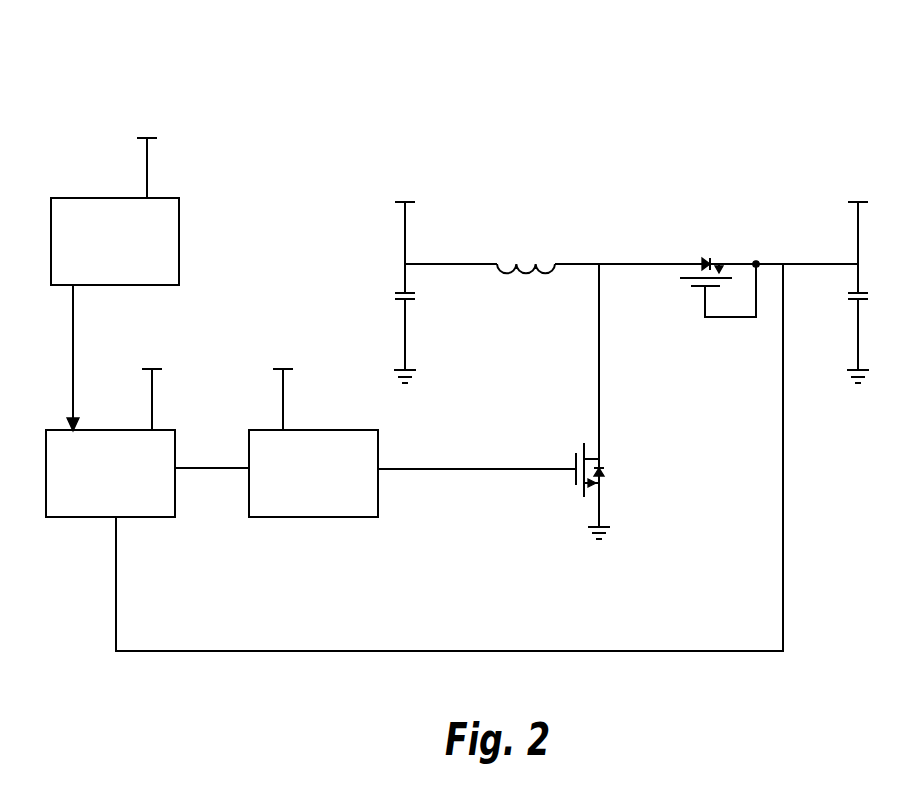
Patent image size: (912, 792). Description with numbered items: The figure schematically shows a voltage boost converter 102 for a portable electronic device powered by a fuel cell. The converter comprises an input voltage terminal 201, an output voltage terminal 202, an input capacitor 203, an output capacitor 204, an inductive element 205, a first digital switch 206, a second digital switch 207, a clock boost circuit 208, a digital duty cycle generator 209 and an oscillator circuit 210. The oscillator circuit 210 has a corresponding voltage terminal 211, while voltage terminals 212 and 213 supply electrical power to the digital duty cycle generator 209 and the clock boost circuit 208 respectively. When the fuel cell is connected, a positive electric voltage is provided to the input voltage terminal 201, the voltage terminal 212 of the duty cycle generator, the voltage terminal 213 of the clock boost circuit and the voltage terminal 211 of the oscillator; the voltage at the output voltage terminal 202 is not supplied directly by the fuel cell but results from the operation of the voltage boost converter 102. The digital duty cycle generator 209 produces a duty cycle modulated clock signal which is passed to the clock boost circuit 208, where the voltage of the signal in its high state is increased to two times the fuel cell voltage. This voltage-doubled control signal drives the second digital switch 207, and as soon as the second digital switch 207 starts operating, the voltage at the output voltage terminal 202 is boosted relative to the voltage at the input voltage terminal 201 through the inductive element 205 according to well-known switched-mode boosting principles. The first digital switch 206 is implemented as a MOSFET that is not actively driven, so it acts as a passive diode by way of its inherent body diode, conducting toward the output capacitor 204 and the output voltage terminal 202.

The voltage boost converter 102 is at (303, 124).
The input voltage terminal 201 is at (398, 205).
The output voltage terminal 202 is at (849, 207).
The input capacitor 203 is at (412, 303).
The output capacitor 204 is at (853, 302).
The inductive element 205 is at (513, 263).
The first digital switch 206 is at (690, 262).
The second digital switch 207 is at (602, 482).
The clock boost circuit 208 is at (288, 518).
The digital duty cycle generator 209 is at (137, 518).
The oscillator circuit 210 is at (179, 238).
The voltage terminal of oscillator circuit 211 is at (137, 139).
The voltage terminal of digital duty cycle generator 212 is at (160, 370).
The voltage terminal of clock boost circuit 213 is at (293, 370).